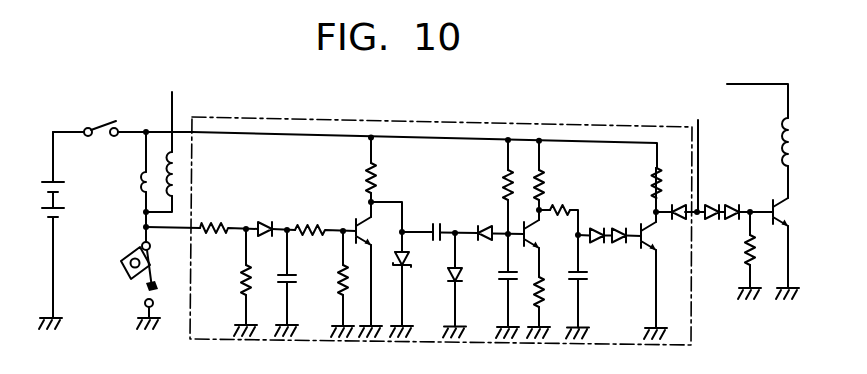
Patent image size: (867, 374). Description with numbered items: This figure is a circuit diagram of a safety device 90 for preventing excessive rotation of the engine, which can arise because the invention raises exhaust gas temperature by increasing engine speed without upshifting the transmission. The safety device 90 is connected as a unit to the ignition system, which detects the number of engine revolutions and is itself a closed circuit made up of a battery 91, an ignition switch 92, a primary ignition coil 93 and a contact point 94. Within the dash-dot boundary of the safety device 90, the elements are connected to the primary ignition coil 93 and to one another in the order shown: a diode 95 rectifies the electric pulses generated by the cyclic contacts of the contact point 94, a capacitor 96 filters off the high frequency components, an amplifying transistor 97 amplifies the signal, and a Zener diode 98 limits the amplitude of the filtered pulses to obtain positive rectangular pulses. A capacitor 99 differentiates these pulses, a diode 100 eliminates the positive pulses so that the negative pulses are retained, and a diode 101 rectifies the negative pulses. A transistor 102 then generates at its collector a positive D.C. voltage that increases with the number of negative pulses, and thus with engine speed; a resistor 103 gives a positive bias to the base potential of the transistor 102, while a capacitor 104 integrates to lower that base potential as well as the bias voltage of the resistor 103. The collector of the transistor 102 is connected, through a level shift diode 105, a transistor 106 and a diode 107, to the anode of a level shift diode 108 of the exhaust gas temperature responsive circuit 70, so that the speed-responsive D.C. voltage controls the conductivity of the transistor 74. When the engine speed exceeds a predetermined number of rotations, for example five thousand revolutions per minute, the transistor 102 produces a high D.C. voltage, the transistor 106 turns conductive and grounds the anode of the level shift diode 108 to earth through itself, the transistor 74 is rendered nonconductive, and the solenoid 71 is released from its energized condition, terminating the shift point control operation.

The exhaust gas temperature responsive circuit 70 is at (736, 80).
The solenoid 71 is at (796, 128).
The transistor 74 is at (771, 211).
The safety device 90 is at (402, 123).
The battery 91 is at (50, 180).
The ignition switch 92 is at (98, 115).
The primary ignition coil 93 is at (146, 186).
The contact point 94 is at (131, 254).
The diode 95 is at (267, 222).
The capacitor 96 is at (290, 271).
The amplifying transistor 97 is at (355, 220).
The Zener diode 98 is at (393, 277).
The capacitor 99 is at (433, 222).
The diode 100 is at (449, 274).
The diode 101 is at (484, 224).
The transistor 102 is at (555, 238).
The resistor 103 is at (503, 188).
The capacitor 104 is at (500, 276).
The level shift diode 105 is at (611, 226).
The transistor 106 is at (639, 243).
The diode 107 is at (681, 204).
The level shift diode 108 is at (731, 205).